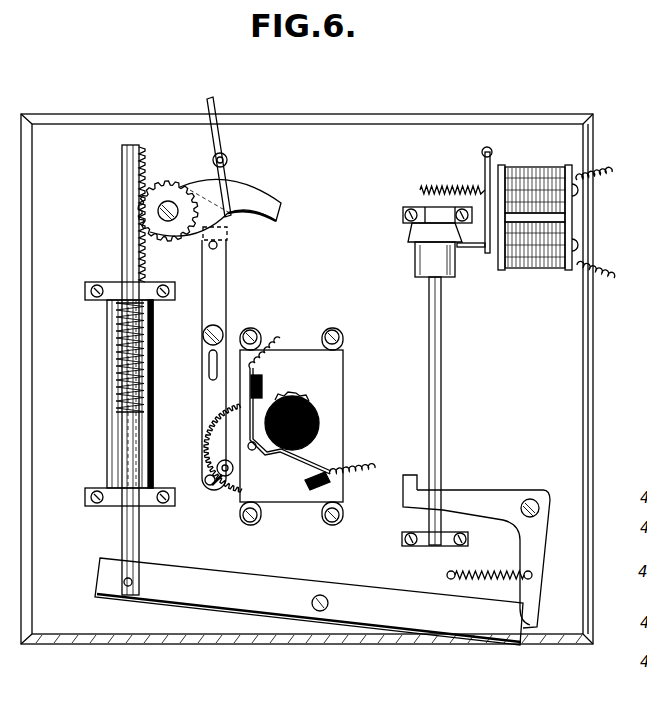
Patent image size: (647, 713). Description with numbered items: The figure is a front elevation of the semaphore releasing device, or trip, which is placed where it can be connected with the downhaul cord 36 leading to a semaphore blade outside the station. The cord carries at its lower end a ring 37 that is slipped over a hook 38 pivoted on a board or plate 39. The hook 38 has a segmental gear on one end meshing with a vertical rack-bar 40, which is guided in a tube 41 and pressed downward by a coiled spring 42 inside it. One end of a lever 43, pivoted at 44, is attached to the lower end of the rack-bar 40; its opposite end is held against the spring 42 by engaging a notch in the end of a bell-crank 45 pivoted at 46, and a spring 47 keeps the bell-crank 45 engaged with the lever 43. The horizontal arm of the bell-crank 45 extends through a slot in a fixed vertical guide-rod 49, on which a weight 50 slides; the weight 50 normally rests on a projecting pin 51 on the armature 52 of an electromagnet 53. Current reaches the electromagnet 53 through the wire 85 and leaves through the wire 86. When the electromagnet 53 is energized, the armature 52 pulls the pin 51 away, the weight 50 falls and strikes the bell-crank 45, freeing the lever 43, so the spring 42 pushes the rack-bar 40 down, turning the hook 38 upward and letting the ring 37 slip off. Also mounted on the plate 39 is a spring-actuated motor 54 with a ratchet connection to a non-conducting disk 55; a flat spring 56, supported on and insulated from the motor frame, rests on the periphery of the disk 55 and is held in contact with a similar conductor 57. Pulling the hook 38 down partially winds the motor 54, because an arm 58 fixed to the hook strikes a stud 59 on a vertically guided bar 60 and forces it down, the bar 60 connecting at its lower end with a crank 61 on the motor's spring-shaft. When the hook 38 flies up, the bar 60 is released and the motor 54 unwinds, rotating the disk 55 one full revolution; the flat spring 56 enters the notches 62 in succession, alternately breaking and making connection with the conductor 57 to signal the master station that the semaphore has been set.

The downhaul cord 36 is at (215, 104).
The ring 37 is at (236, 216).
The hook 38 is at (270, 199).
The board or plate 39 is at (307, 379).
The rack-bar 40 is at (122, 248).
The tube 41 is at (108, 457).
The coiled spring 42 is at (118, 380).
The lever 43 is at (309, 601).
The pivot 44 is at (322, 612).
The bell-crank 45 is at (538, 553).
The pivot 46 is at (533, 500).
The spring 47 is at (447, 575).
The guide-rod 49 is at (442, 440).
The weight 50 is at (418, 273).
The projecting pin 51 is at (476, 249).
The armature 52 is at (485, 175).
The electromagnet 53 is at (545, 167).
The spring-actuated motor 54 is at (291, 426).
The non-conducting disk 55 is at (317, 432).
The flat spring 56 is at (316, 489).
The conductor 57 is at (232, 427).
The arm 58 is at (228, 238).
The stud 59 is at (216, 250).
The bar 60 is at (203, 314).
The crank 61 is at (209, 490).
The notches 62 is at (300, 395).
The wire 85 is at (614, 278).
The wire 86 is at (612, 172).